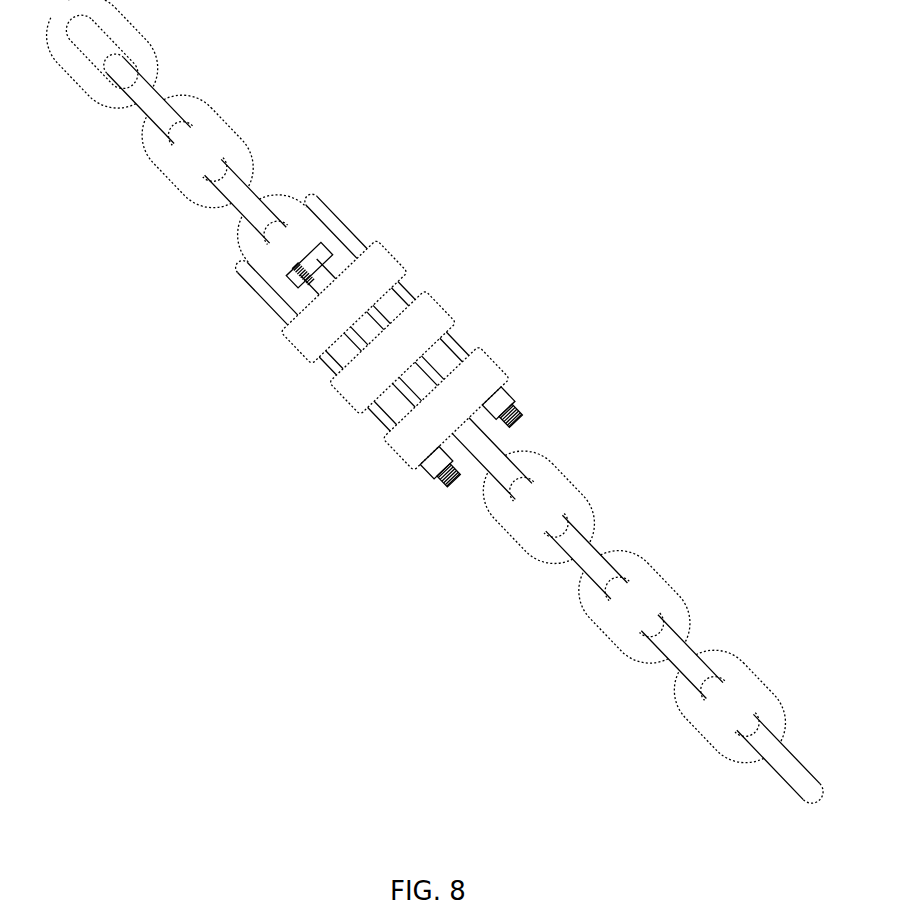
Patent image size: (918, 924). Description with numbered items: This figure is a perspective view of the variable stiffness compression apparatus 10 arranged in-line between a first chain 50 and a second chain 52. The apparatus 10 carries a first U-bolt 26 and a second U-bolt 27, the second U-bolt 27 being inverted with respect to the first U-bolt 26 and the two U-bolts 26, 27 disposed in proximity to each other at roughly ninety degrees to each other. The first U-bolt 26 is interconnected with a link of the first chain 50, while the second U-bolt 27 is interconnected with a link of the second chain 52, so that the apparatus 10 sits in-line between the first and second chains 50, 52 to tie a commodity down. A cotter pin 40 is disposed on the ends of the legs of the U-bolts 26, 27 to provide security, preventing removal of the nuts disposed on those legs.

The compression apparatus 10 is at (440, 317).
The first U-bolt 26 is at (317, 218).
The second U-bolt 27 is at (515, 482).
The cotter pin 40 is at (287, 283).
The first chain 50 is at (183, 111).
The second chain 52 is at (637, 588).